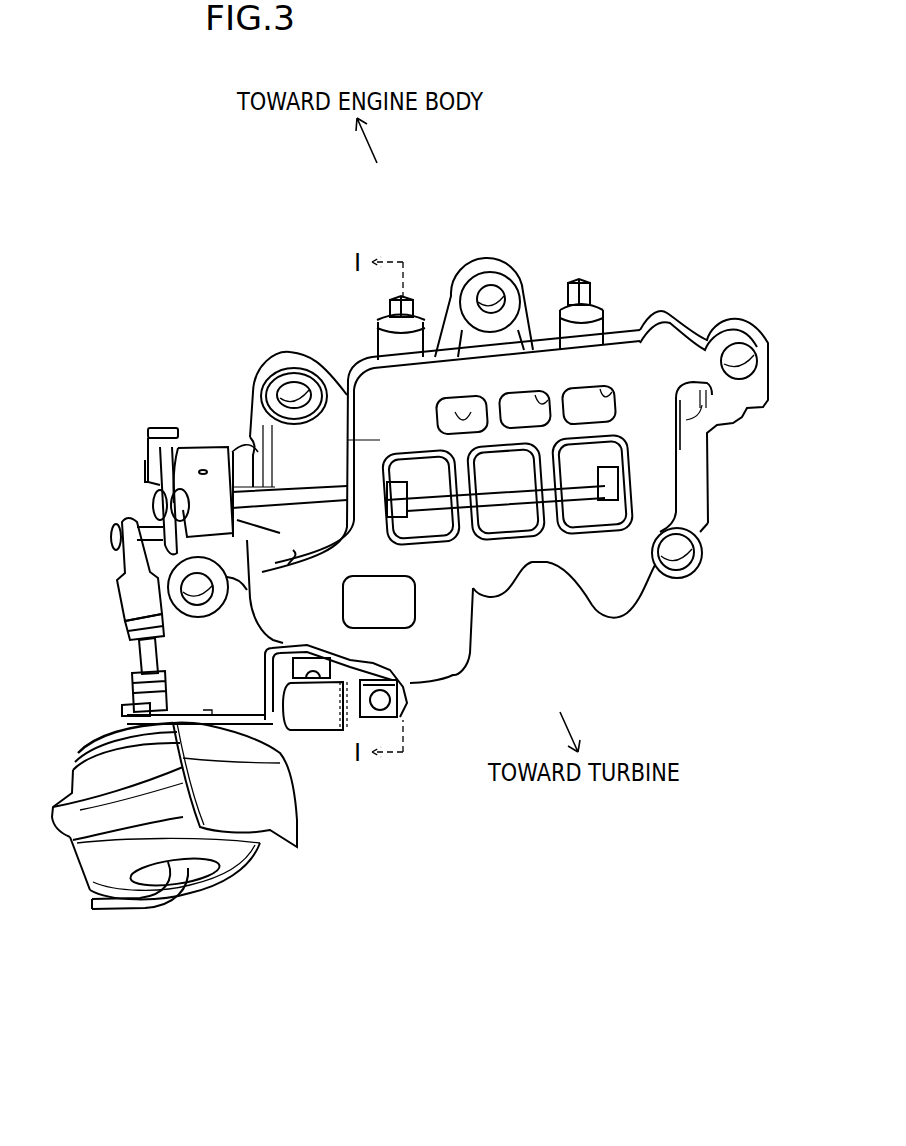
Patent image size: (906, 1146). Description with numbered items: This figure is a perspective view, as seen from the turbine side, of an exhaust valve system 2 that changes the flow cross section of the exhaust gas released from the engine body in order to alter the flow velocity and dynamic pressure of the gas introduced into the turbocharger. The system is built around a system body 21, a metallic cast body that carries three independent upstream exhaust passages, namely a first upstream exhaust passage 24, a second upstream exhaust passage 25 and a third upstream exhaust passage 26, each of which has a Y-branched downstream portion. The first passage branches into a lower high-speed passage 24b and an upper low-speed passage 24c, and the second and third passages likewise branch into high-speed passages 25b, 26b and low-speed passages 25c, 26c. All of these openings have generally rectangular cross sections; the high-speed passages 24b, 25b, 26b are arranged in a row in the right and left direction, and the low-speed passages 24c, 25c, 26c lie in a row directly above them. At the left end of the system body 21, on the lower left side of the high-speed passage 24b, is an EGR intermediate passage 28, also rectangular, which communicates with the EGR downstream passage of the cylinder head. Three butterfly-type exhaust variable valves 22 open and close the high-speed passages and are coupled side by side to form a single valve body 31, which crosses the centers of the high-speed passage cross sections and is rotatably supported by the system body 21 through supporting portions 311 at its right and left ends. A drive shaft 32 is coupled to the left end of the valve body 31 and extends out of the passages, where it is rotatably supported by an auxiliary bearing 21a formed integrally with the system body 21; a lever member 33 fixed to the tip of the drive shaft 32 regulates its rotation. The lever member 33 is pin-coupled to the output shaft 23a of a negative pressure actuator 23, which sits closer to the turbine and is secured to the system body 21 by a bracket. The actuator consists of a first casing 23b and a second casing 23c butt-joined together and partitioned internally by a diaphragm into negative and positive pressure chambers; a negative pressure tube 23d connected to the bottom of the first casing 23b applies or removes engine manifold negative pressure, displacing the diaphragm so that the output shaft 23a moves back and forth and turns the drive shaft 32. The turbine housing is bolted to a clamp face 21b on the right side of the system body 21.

The exhaust valve system 2 is at (246, 259).
The system body 21 is at (617, 620).
The auxiliary bearing 21a is at (230, 452).
The clamp face 21b is at (662, 456).
The exhaust variable valves 22 is at (580, 518).
The negative pressure actuator 23 is at (259, 882).
The output shaft 23a is at (118, 605).
The first casing 23b is at (90, 860).
The second casing 23c is at (74, 780).
The negative pressure tube 23d is at (115, 905).
The first upstream exhaust passage 24 is at (536, 197).
The high-speed passage 24b is at (420, 455).
The low-speed passage 24c is at (474, 413).
The second upstream exhaust passage 25 is at (634, 148).
The high-speed passage 25b is at (507, 455).
The low-speed passage 25c is at (537, 403).
The third upstream exhaust passage 26 is at (735, 197).
The high-speed passage 26b is at (605, 455).
The low-speed passage 26c is at (615, 395).
The EGR intermediate passage 28 is at (345, 597).
The valve body 31 is at (588, 498).
The supporting portions 311 is at (393, 505).
The drive shaft 32 is at (330, 488).
The lever member 33 is at (166, 426).